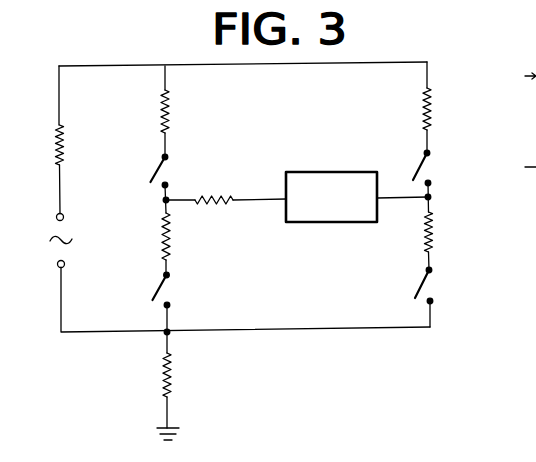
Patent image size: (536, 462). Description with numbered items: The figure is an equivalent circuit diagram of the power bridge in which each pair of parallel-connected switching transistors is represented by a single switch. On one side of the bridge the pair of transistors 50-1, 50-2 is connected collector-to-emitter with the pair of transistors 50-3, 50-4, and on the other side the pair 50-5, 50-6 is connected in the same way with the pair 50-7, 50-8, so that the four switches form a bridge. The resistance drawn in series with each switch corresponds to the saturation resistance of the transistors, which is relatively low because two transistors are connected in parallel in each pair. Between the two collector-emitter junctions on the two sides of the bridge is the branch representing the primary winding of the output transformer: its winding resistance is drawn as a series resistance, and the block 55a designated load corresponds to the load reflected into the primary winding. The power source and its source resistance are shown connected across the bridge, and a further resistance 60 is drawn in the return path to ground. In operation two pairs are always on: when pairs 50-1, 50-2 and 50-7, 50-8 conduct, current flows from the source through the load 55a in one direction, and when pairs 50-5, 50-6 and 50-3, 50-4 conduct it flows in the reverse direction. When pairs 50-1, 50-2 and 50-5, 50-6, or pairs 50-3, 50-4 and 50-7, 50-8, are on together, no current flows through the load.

The switching transistor 50-1 is at (122, 160).
The switching transistor 50-2 is at (156, 176).
The switching transistor 50-3 is at (124, 291).
The switching transistor 50-4 is at (159, 286).
The switching transistor 50-5 is at (463, 171).
The switching transistor 50-6 is at (421, 170).
The switching transistor 50-7 is at (374, 282).
The switching transistor 50-8 is at (421, 289).
The load 55a is at (324, 172).
The resistor 60 is at (172, 377).